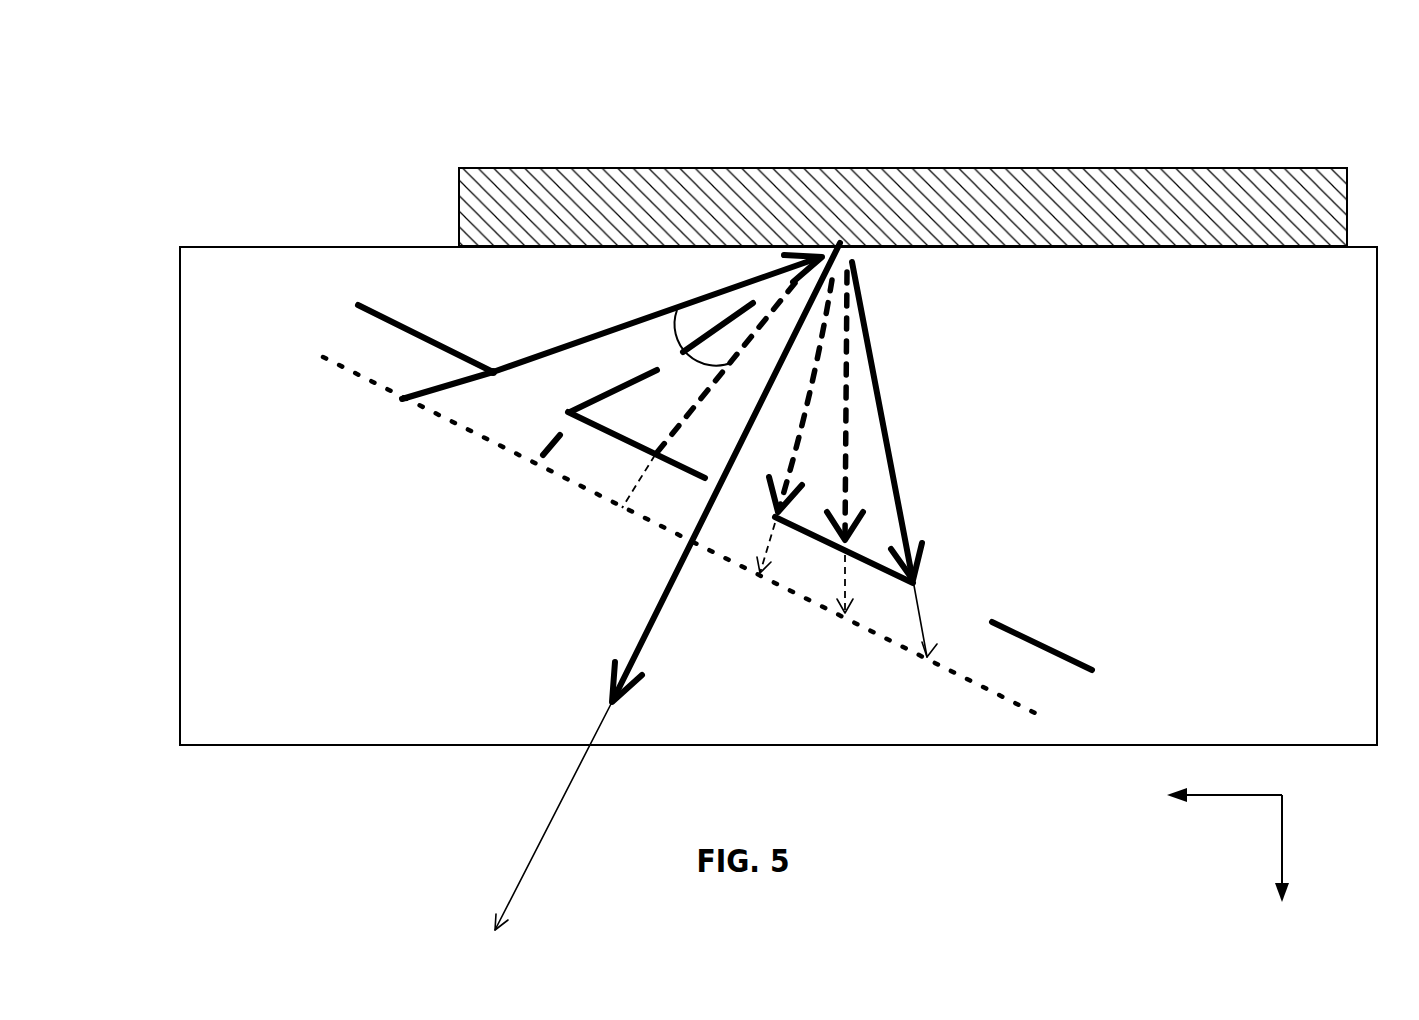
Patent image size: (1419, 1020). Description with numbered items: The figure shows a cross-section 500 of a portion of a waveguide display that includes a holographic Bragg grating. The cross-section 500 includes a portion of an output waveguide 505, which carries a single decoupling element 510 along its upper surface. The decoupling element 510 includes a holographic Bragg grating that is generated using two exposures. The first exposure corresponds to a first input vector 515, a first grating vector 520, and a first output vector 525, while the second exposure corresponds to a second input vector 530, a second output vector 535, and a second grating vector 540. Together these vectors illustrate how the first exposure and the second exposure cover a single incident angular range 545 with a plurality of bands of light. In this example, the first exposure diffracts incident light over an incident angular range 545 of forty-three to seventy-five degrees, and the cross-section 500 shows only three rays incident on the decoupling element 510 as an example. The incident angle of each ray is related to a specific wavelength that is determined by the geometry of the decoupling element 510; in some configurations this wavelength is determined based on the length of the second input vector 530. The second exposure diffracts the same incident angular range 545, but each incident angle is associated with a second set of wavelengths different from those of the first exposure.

The cross-section 500 is at (213, 38).
The output waveguide 505 is at (299, 246).
The decoupling element 510 is at (875, 167).
The first input vector 515 is at (438, 384).
The first grating vector 520 is at (560, 802).
The first output vector 525 is at (920, 608).
The second input vector 530 is at (527, 350).
The second output vector 535 is at (1008, 378).
The second grating vector 540 is at (648, 614).
The incident angular range 545 is at (673, 328).